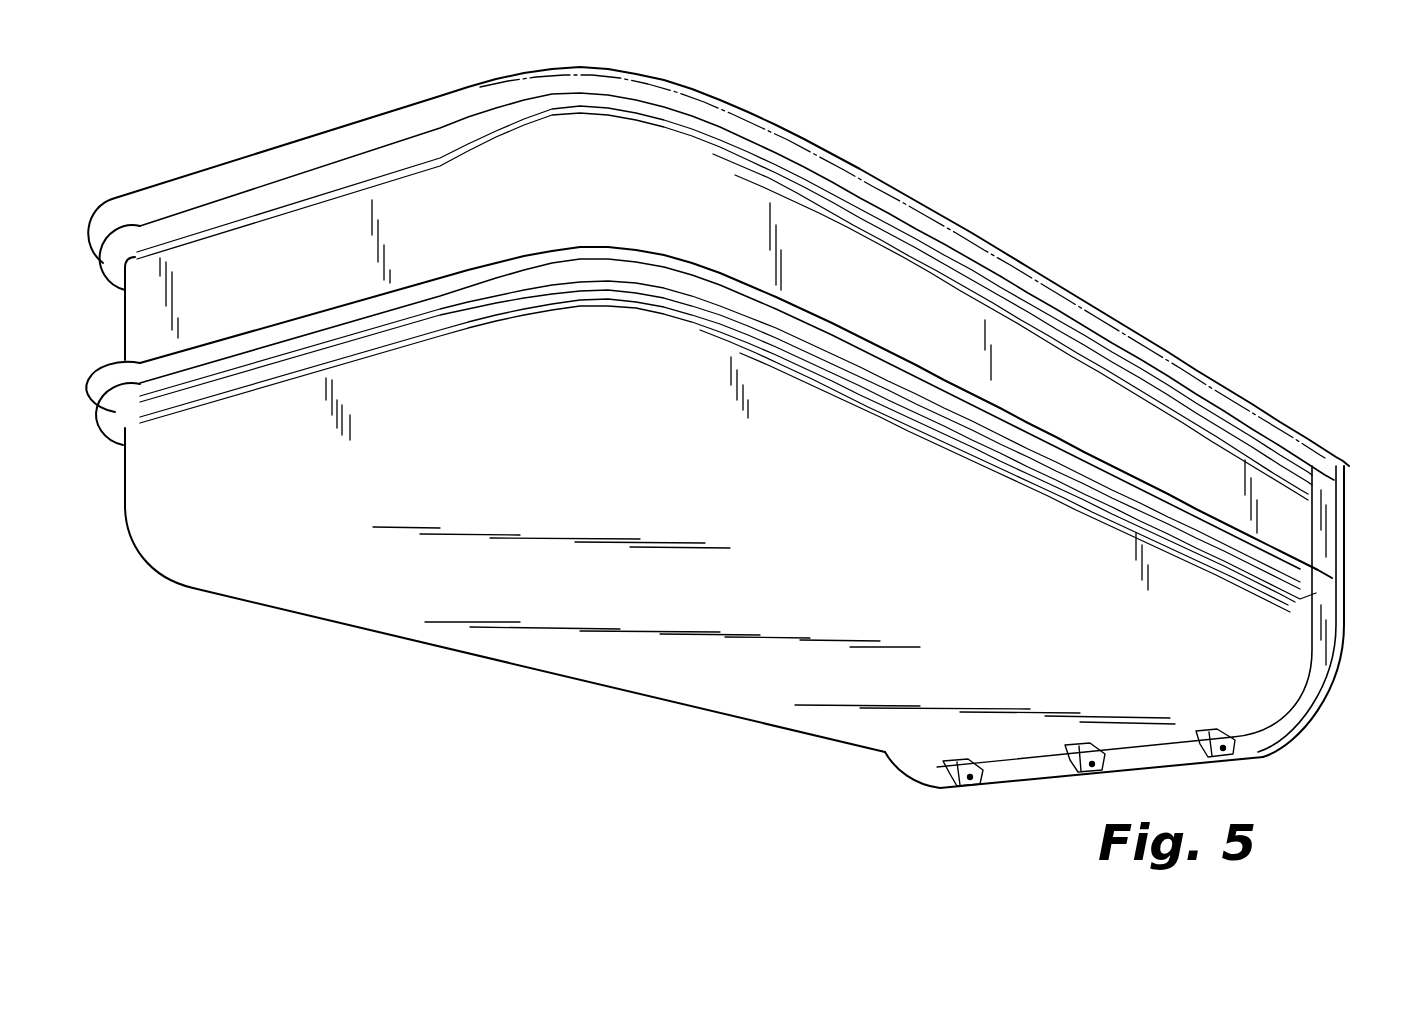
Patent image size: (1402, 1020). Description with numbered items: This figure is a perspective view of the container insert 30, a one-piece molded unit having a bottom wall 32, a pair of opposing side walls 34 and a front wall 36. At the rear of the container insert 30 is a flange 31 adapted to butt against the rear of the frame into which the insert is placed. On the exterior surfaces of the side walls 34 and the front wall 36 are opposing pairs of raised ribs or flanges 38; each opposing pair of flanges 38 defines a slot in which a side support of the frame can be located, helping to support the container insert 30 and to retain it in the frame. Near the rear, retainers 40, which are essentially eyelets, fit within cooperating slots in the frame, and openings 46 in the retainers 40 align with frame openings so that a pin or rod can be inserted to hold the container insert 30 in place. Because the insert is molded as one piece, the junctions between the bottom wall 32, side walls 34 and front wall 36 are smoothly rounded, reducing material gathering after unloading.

The container insert 30 is at (922, 181).
The flange 31 is at (1333, 516).
The bottom wall 32 is at (615, 658).
The side walls 34 is at (1120, 417).
The front wall 36 is at (323, 218).
The raised ribs or flanges 38 is at (1003, 252).
The retainers 40 is at (928, 788).
The openings 46 is at (990, 787).